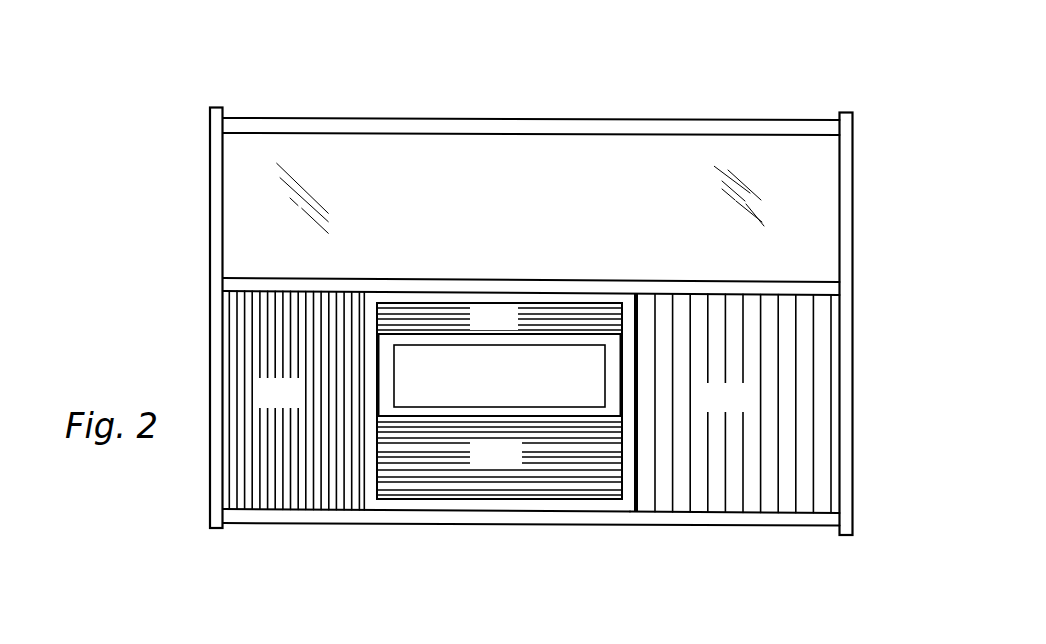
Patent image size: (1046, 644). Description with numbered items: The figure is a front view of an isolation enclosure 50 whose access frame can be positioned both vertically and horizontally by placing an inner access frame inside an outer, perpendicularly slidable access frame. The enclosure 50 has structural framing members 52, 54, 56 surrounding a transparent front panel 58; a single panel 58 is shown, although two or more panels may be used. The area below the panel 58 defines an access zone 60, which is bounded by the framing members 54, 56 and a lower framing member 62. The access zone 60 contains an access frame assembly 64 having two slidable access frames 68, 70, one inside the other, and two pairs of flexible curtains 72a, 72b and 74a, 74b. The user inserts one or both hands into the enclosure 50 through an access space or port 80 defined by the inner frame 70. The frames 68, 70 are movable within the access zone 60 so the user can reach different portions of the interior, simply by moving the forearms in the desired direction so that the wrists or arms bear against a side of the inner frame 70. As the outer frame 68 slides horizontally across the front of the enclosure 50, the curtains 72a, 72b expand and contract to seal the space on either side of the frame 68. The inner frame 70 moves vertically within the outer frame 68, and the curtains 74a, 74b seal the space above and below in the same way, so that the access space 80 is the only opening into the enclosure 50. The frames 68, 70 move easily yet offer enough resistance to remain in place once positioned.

The enclosure 50 is at (721, 100).
The structural framing member 52 is at (538, 119).
The structural framing member 54 is at (789, 282).
The structural framing member 56 is at (853, 268).
The transparent front panel 58 is at (507, 216).
The access zone 60 is at (748, 513).
The lower framing member 62 is at (654, 525).
The access frame assembly 64 is at (292, 508).
The outer access frame 68 is at (437, 510).
The inner access frame 70 is at (499, 454).
The flexible curtain 72a is at (262, 407).
The flexible curtain 72b is at (708, 408).
The flexible curtain 74a is at (508, 330).
The flexible curtain 74b is at (473, 466).
The access space or port 80 is at (501, 386).